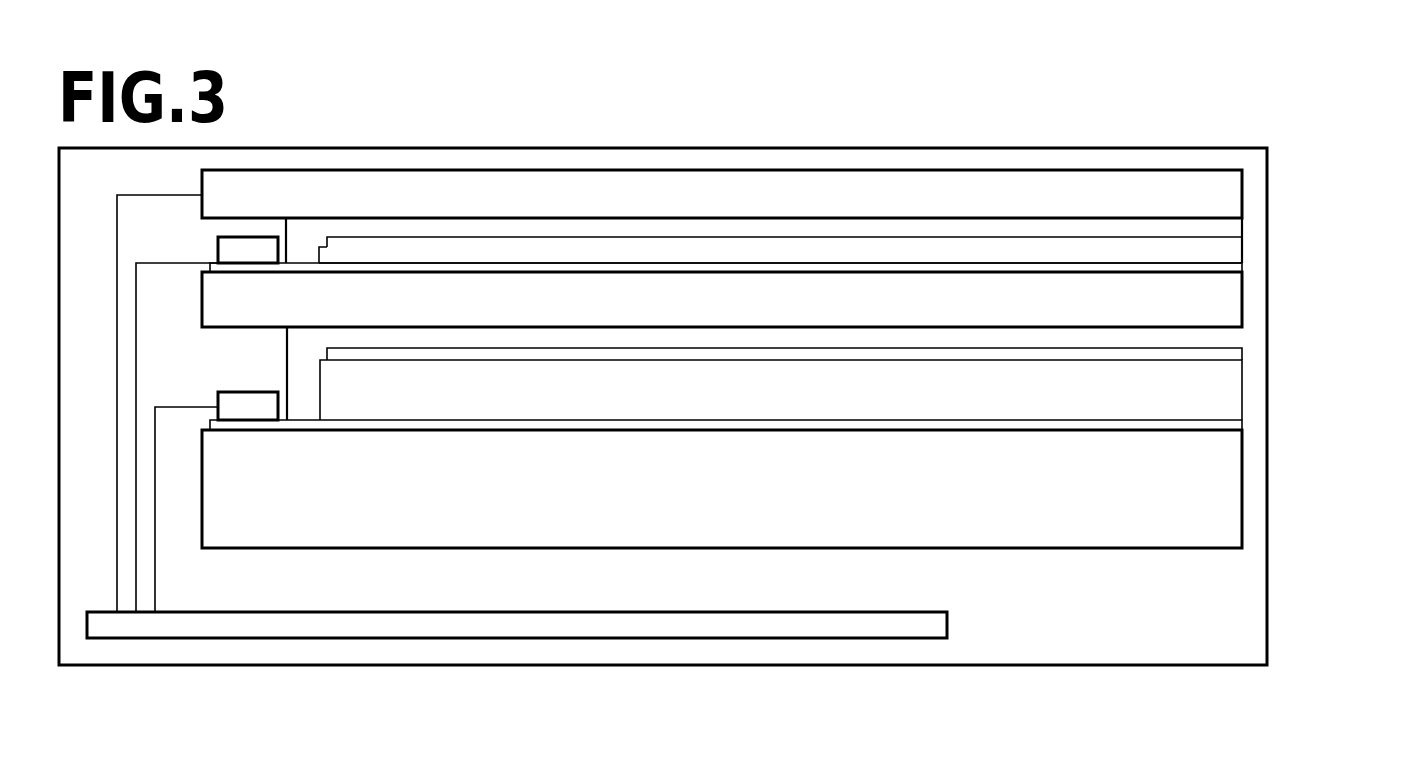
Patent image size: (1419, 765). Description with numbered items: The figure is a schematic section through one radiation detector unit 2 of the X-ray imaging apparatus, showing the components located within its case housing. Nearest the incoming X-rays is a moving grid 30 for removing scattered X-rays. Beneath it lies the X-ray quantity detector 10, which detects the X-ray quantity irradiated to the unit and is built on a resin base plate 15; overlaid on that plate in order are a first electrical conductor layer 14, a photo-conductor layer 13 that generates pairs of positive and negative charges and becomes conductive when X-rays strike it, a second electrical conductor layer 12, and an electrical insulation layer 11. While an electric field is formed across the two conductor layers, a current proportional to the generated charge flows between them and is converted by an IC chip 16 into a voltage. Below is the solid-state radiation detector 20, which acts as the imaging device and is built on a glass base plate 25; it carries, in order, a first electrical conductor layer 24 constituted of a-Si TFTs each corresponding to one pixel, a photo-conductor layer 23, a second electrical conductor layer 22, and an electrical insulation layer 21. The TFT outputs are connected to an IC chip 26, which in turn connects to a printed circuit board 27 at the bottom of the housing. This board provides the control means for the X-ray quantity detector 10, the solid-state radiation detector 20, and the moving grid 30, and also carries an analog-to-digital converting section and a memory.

The radiation detector unit 2 is at (1013, 114).
The moving grid 30 is at (1233, 187).
The X-ray quantity detector 10 is at (801, 267).
The electrical insulation layer 11 is at (1233, 230).
The second electrical conductor layer 12 is at (1233, 243).
The photo-conductor layer 13 is at (1233, 255).
The first electrical conductor layer 14 is at (1233, 268).
The resin base plate 15 is at (771, 311).
The solid-state radiation detector 20 is at (801, 437).
The electrical insulation layer 21 is at (1233, 340).
The second electrical conductor layer 22 is at (1233, 357).
The photo-conductor layer 23 is at (1233, 398).
The first electrical conductor layer 24 is at (1233, 428).
The glass base plate 25 is at (771, 489).
The IC chip 16 is at (247, 248).
The IC chip 26 is at (235, 402).
The printed circuit board 27 is at (378, 626).